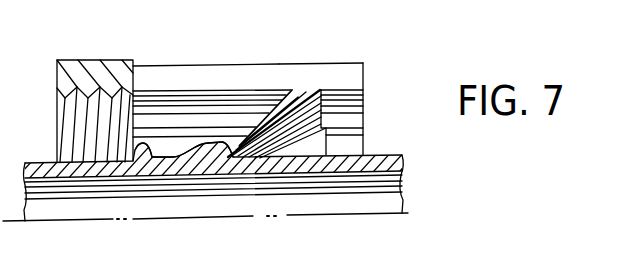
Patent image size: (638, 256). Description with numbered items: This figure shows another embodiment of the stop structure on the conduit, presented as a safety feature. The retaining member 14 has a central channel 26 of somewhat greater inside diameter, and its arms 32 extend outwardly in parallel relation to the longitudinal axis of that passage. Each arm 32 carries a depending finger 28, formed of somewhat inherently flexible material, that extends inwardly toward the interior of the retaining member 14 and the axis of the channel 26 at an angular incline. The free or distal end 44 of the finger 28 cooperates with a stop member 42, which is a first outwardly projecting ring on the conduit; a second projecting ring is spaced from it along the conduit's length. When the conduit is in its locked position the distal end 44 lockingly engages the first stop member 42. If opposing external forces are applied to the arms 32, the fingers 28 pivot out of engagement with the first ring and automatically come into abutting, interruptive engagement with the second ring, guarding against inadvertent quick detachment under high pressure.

The retaining member 14 is at (342, 53).
The central channel 26 is at (356, 133).
The finger 28 is at (285, 122).
The arm 32 is at (279, 63).
The stop member 42 is at (200, 148).
The distal end 44 is at (238, 149).